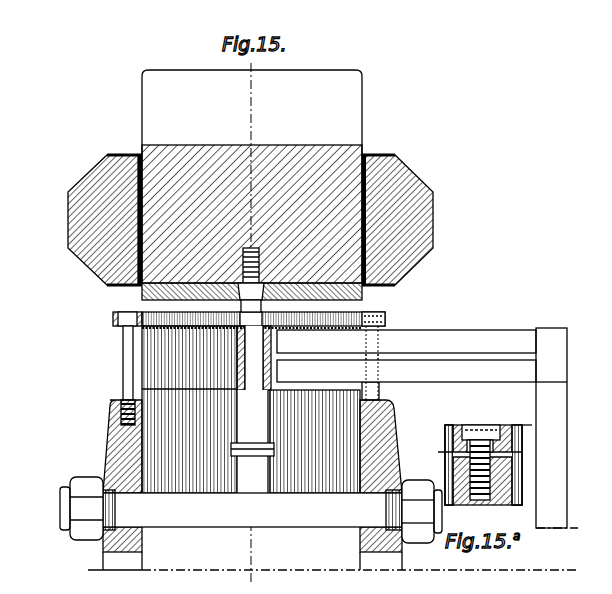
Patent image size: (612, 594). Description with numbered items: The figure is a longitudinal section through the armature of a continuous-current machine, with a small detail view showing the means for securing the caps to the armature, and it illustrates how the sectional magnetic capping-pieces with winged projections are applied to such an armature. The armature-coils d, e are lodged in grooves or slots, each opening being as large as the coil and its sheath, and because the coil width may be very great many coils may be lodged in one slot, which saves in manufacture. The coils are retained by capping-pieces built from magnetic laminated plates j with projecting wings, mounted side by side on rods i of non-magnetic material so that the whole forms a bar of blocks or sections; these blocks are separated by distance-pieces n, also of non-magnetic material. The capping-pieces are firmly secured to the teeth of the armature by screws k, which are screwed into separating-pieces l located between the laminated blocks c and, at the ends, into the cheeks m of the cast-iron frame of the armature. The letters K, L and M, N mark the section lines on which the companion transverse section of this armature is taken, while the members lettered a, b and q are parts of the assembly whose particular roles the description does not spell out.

The main block a is at (252, 176).
The packing layer b is at (205, 322).
The laminated block c is at (251, 409).
The armature-coil d is at (493, 346).
The armature-coil e is at (315, 332).
The rod i is at (352, 290).
The magnetic laminated plate j is at (330, 322).
The screw k is at (124, 361).
The separating-piece l is at (255, 419).
The cheek m is at (333, 485).
The distance-piece n is at (116, 321).
The bolt q is at (373, 422).
The section line N is at (378, 443).
The section line M is at (374, 349).
The section line K is at (251, 296).
The section line L is at (251, 514).